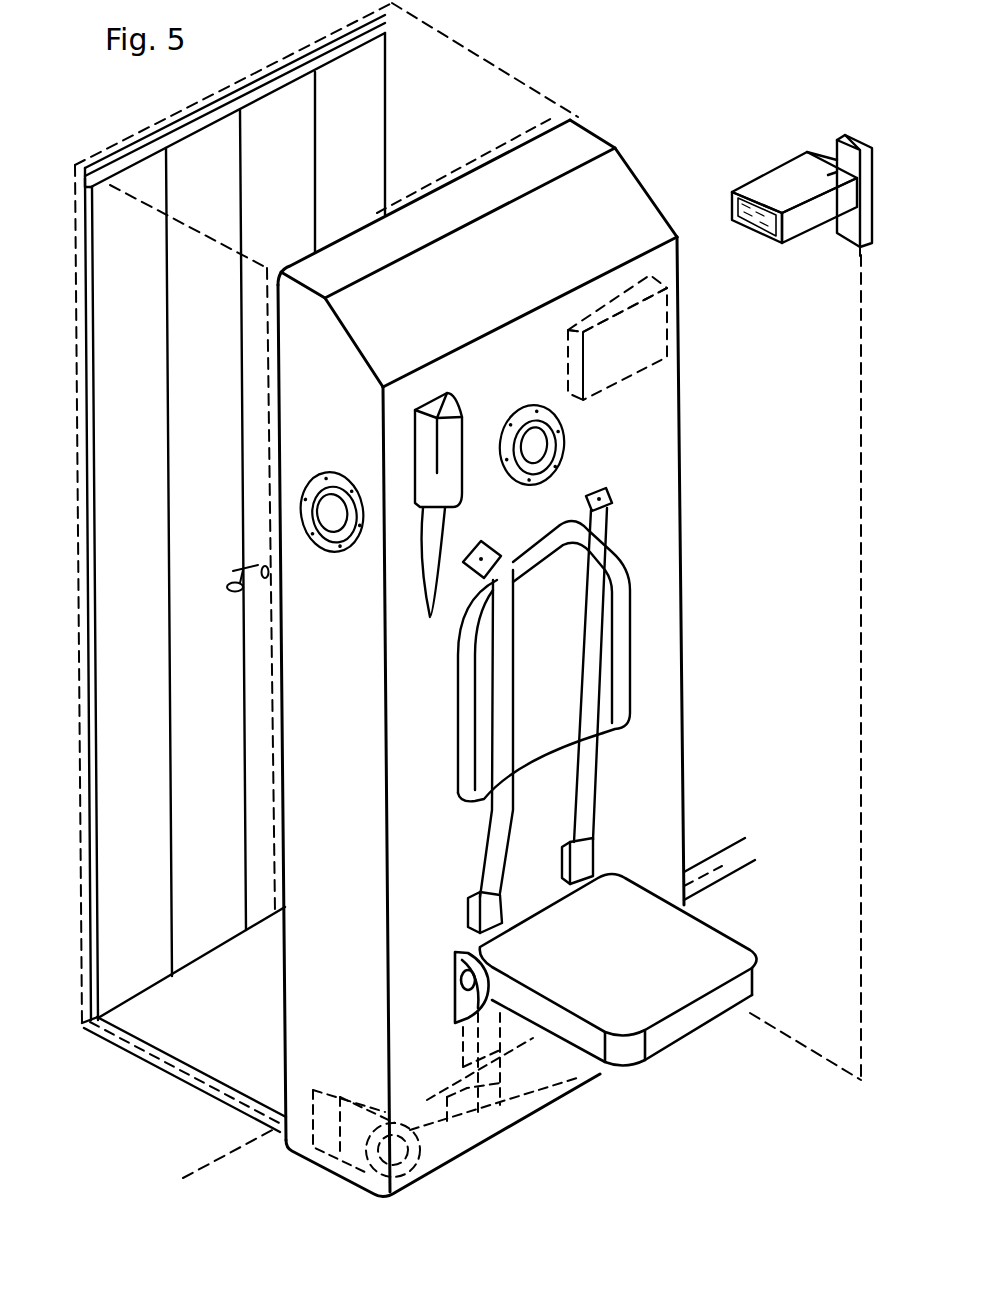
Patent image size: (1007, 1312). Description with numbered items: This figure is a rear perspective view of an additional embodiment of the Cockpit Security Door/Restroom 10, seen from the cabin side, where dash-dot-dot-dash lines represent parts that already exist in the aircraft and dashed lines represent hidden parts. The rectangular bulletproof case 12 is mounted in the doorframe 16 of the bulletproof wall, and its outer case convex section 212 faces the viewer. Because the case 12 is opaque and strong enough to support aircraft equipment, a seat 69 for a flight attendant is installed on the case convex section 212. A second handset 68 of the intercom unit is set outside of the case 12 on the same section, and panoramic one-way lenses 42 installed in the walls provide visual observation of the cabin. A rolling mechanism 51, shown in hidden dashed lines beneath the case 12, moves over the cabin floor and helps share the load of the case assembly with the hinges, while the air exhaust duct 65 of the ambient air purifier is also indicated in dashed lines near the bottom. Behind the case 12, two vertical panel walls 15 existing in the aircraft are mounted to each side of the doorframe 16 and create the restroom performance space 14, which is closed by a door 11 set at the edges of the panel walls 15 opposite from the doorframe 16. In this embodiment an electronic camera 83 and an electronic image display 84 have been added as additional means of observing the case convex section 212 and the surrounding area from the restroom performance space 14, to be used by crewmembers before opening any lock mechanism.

The Cockpit Security Door/Restroom 10 is at (630, 100).
The door 11 is at (221, 426).
The rectangular bulletproof case 12 is at (680, 390).
The restroom performance space 14 is at (238, 1052).
The vertical panel walls 15 is at (523, 80).
The doorframe 16 is at (270, 797).
The panoramic one-way lenses 42 is at (545, 442).
The rolling mechanism 51 is at (438, 1168).
The air exhaust duct 65 is at (313, 1090).
The second handset 68 is at (455, 440).
The seat 69 is at (627, 897).
The electronic camera 83 is at (811, 195).
The electronic image display 84 is at (638, 363).
The case convex section 212 is at (643, 758).